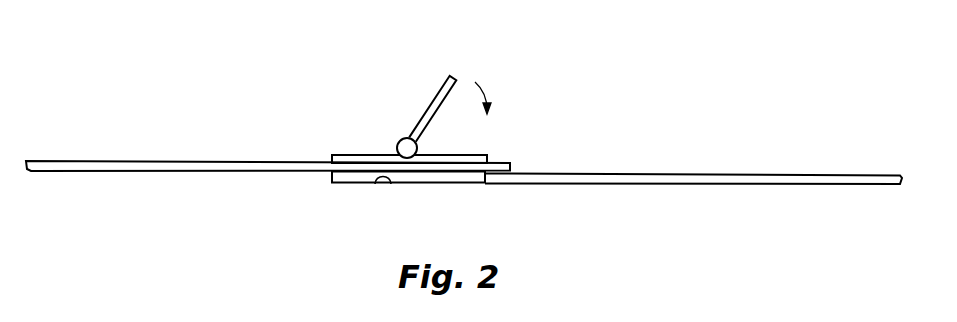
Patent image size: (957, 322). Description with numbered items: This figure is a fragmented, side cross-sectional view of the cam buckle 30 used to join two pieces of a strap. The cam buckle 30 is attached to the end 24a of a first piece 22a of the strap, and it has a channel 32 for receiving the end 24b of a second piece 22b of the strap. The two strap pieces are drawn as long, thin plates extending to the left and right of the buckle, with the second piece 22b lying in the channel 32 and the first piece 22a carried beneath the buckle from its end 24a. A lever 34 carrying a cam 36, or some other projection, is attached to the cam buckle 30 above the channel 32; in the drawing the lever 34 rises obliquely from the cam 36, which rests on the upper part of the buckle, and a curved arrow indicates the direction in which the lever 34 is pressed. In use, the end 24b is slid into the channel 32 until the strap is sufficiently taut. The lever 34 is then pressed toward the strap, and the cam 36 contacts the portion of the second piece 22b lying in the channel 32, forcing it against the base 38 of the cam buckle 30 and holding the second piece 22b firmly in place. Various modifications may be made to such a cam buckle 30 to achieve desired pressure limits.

The first piece of the strap 22a is at (808, 174).
The second piece of the strap 22b is at (122, 162).
The end of the first piece 24a is at (485, 186).
The end of the second piece 24b is at (510, 162).
The cam buckle 30 is at (368, 93).
The channel 32 is at (325, 178).
The lever 34 is at (441, 80).
The cam 36 is at (403, 144).
The base of the cam buckle 38 is at (376, 184).